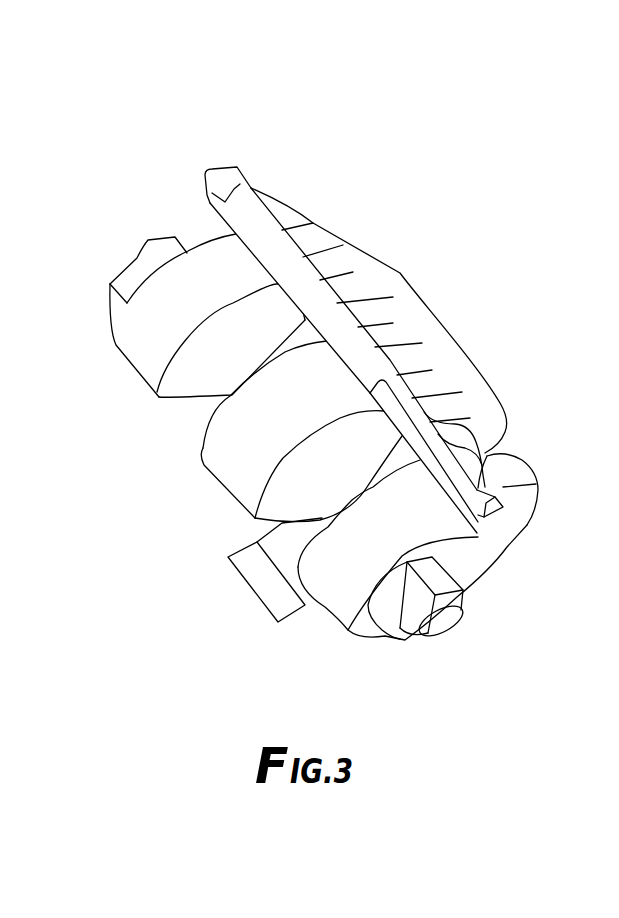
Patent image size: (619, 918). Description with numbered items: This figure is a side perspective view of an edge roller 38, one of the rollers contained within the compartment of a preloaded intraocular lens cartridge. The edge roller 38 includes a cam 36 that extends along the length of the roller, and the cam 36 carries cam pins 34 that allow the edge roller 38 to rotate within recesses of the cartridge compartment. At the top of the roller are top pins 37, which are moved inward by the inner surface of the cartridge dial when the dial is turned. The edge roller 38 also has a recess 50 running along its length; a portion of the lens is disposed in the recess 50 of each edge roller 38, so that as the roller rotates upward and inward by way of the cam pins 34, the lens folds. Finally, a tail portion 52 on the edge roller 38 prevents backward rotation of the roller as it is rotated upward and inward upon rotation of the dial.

The cam pins 34 is at (145, 257).
The cam 36 is at (212, 481).
The top pins 37 is at (228, 172).
The edge roller 38 is at (302, 183).
The recess 50 is at (430, 505).
The tail portion 52 is at (273, 593).